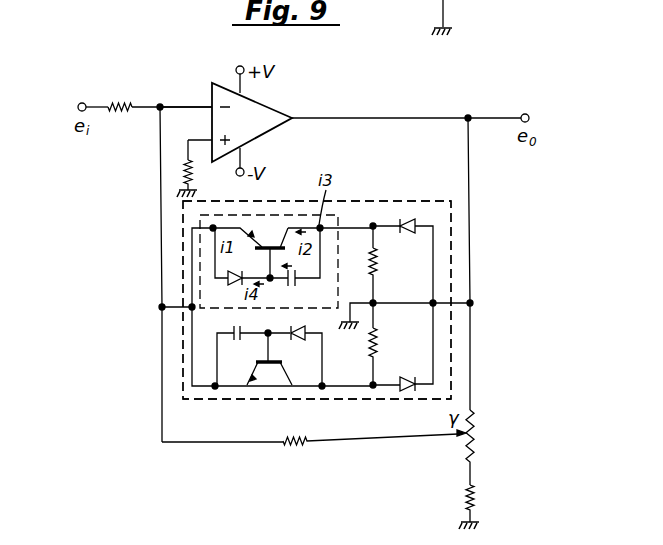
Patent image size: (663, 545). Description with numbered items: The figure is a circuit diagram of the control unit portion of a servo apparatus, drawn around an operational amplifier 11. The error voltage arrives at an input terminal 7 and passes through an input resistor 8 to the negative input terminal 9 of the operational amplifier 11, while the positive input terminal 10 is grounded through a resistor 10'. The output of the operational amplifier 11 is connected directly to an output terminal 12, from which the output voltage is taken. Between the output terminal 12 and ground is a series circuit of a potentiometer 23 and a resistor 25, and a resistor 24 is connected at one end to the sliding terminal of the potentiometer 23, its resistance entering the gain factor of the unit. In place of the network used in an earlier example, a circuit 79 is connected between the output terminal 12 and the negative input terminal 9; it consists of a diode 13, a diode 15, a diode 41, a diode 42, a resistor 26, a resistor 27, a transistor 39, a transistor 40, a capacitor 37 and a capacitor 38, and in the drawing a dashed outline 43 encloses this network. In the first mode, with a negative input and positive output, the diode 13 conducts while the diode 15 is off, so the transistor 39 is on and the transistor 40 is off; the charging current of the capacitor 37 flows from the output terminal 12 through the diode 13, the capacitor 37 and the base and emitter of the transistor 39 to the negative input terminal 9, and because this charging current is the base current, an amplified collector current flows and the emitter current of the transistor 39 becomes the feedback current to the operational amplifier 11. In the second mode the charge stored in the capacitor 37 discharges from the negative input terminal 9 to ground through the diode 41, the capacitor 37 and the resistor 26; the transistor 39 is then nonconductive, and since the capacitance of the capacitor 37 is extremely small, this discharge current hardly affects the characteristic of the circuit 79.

The input terminal 7 is at (80, 103).
The input resistor 8 is at (120, 112).
The negative input terminal 9 is at (204, 104).
The positive input terminal 10 is at (191, 136).
The resistor 10' is at (203, 178).
The operational amplifier 11 is at (286, 118).
The output terminal 12 is at (525, 113).
The diode 13 is at (408, 219).
The diode 15 is at (407, 392).
The potentiometer 23 is at (476, 448).
The resistor 24 is at (300, 446).
The resistor 25 is at (468, 502).
The resistor 26 is at (378, 264).
The resistor 27 is at (378, 346).
The capacitor 37 is at (292, 286).
The capacitor 38 is at (233, 351).
The transistor 39 is at (279, 246).
The transistor 40 is at (267, 366).
The diode 41 is at (213, 267).
The diode 42 is at (298, 341).
The nonlinear feedback network 43 is at (183, 215).
The circuit 79 is at (365, 200).